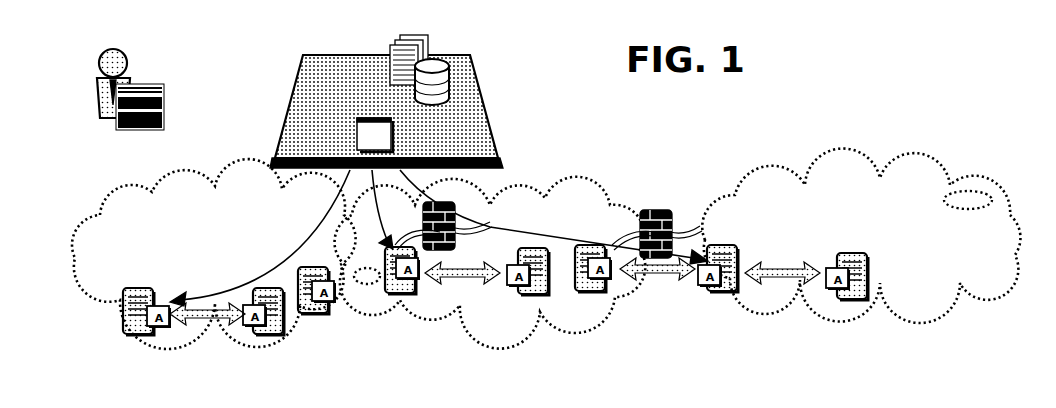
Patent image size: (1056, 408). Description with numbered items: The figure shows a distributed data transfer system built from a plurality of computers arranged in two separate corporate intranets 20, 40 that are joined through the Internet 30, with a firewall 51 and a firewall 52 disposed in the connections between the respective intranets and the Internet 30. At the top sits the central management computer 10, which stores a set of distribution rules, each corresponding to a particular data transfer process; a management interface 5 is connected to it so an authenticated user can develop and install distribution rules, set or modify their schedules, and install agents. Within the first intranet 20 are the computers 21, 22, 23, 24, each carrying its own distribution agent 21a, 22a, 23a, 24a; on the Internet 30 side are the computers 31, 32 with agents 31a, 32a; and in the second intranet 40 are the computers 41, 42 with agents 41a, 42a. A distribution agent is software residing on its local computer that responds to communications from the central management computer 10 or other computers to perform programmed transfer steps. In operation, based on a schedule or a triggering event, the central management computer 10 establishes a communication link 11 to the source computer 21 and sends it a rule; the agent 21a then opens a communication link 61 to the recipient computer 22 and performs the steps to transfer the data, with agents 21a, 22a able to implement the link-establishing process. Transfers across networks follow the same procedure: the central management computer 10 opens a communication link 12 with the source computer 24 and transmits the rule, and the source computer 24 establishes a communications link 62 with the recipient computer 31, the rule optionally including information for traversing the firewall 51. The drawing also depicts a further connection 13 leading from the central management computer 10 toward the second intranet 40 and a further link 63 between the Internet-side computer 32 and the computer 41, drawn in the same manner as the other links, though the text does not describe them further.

The management interface 5 is at (97, 80).
The central management computer 10 is at (475, 86).
The communication link 11 is at (318, 237).
The communication link 12 is at (384, 212).
The connection to second corporate intranet 13 is at (410, 183).
The corporate intranet 20 is at (100, 213).
The source computer 21 is at (125, 334).
The distribution agent 21a is at (160, 328).
The recipient computer 22 is at (268, 334).
The distribution agent 22a is at (245, 327).
The computer 23 is at (313, 313).
The distribution agent 23a is at (334, 300).
The source computer 24 is at (401, 295).
The distribution agent 24a is at (413, 286).
The Internet 30 is at (543, 200).
The recipient computer 31 is at (530, 294).
The distribution agent 31a is at (513, 288).
The computer 32 is at (581, 292).
The distribution agent 32a is at (600, 280).
The corporate intranet 40 is at (832, 178).
The computer 41 is at (732, 292).
The distribution agent 41a is at (705, 286).
The computer 42 is at (862, 300).
The distribution agent 42a is at (840, 290).
The firewall 51 is at (440, 244).
The firewall 52 is at (652, 210).
The communication link 61 is at (198, 322).
The communications link 62 is at (470, 282).
The communication link 63 is at (658, 280).